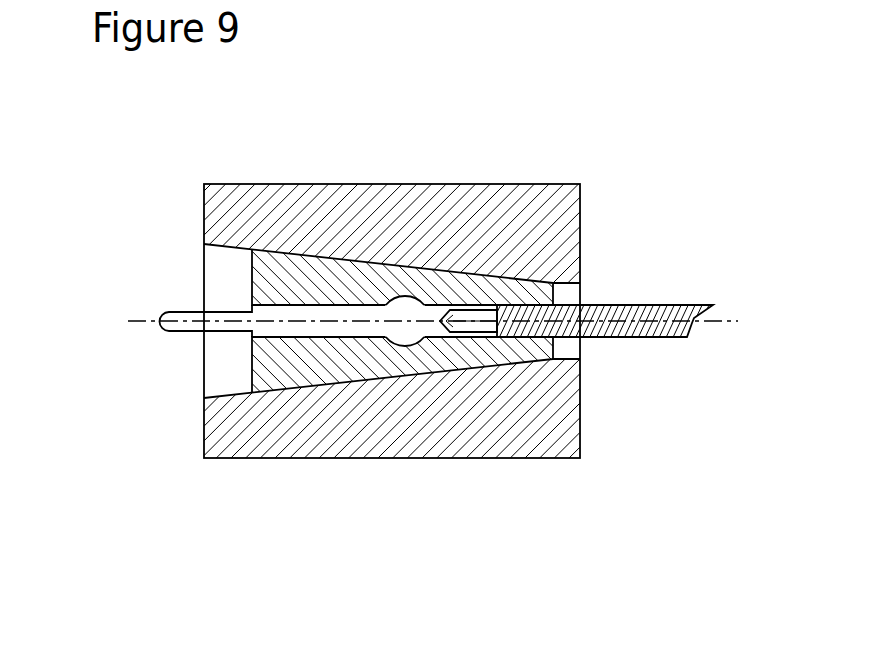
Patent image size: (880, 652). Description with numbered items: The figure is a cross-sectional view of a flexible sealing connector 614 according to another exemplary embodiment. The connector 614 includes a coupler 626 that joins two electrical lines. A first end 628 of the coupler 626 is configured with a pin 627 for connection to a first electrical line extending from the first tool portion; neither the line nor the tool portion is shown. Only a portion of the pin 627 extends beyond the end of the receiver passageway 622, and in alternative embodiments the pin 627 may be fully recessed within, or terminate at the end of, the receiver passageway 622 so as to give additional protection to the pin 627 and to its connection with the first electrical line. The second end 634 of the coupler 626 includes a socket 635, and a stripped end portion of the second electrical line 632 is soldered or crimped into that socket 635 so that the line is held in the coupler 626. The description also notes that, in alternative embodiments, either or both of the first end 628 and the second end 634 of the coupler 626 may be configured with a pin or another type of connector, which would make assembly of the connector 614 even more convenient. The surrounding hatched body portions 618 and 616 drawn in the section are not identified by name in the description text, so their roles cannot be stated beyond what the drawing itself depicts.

The connector 614 is at (376, 315).
The outer housing block 618 is at (309, 184).
The upper tapered insert 616 is at (394, 262).
The first end 628 is at (289, 335).
The receiver passageway 622 is at (250, 246).
The coupler 626 is at (404, 337).
The pin 627 is at (178, 333).
The second electrical line 632 is at (650, 310).
The second end 634 is at (482, 335).
The socket 635 is at (480, 307).